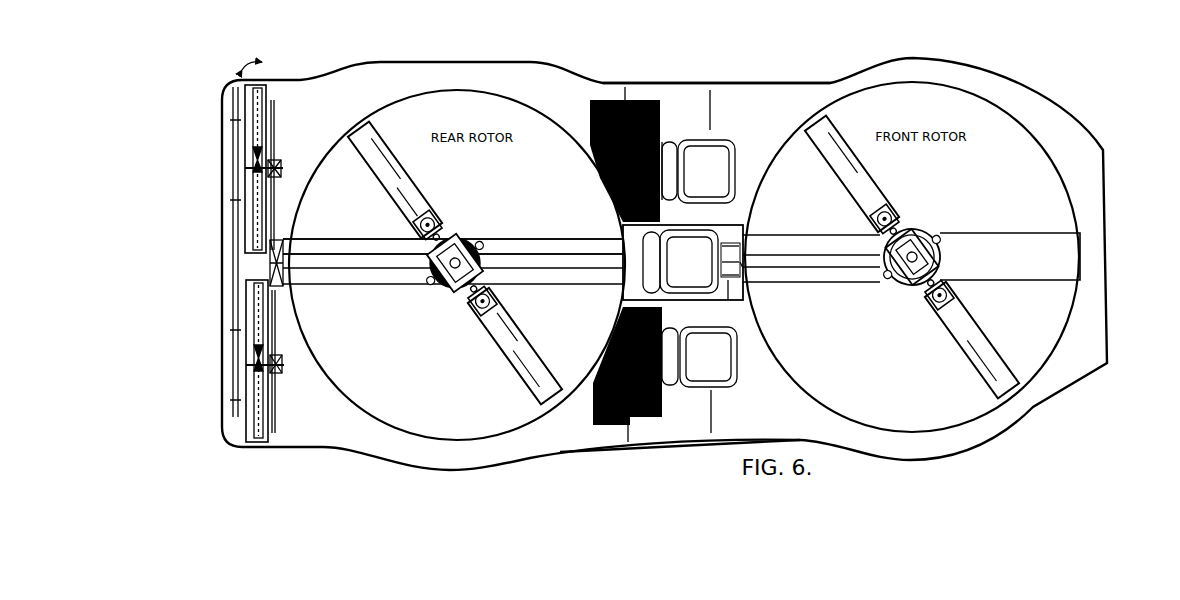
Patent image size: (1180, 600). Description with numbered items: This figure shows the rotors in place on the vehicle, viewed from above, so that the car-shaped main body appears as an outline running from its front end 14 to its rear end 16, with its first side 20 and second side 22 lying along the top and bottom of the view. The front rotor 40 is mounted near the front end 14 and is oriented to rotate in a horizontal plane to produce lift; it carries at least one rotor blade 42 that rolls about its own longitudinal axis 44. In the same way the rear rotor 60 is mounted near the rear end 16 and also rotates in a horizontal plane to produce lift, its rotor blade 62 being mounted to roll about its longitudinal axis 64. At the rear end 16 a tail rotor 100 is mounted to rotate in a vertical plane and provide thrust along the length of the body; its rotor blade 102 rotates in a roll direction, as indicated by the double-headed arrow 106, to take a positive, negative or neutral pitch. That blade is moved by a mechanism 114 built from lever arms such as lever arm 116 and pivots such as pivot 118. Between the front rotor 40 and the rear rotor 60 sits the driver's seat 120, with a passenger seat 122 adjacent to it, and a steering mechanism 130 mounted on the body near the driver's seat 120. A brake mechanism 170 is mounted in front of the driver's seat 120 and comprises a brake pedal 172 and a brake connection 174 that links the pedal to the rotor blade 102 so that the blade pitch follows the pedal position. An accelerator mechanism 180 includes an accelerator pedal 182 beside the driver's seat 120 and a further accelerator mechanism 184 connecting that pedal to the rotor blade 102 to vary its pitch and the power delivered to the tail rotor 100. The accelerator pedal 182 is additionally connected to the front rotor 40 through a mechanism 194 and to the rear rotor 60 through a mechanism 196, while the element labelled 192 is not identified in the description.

The front end 14 is at (1103, 183).
The rear end 16 is at (222, 348).
The first side 20 is at (690, 442).
The second side 22 is at (695, 82).
The front rotor 40 is at (918, 257).
The rotor blade 42 is at (957, 323).
The longitudinal axis 44 is at (980, 357).
The rear rotor 60 is at (456, 263).
The rotor blade 62 is at (507, 325).
The longitudinal axis 64 is at (490, 332).
The tail rotor 100 is at (244, 238).
The rotor blade 102 is at (258, 127).
The double-headed arrow 106 is at (250, 60).
The mechanism 114 is at (250, 182).
The lever arm 116 is at (247, 173).
The pivot 118 is at (250, 157).
The driver's seat 120 is at (723, 223).
The passenger seat 122 is at (745, 352).
The steering mechanism 130 is at (733, 255).
The brake mechanism 170 is at (740, 252).
The brake pedal 172 is at (735, 262).
The brake connection 174 is at (742, 267).
The accelerator mechanism 180 is at (732, 287).
The accelerator pedal 182 is at (728, 272).
The accelerator mechanism 184 is at (744, 270).
The rear rail 192 is at (380, 275).
The mechanism 194 is at (862, 272).
The mechanism 196 is at (560, 247).